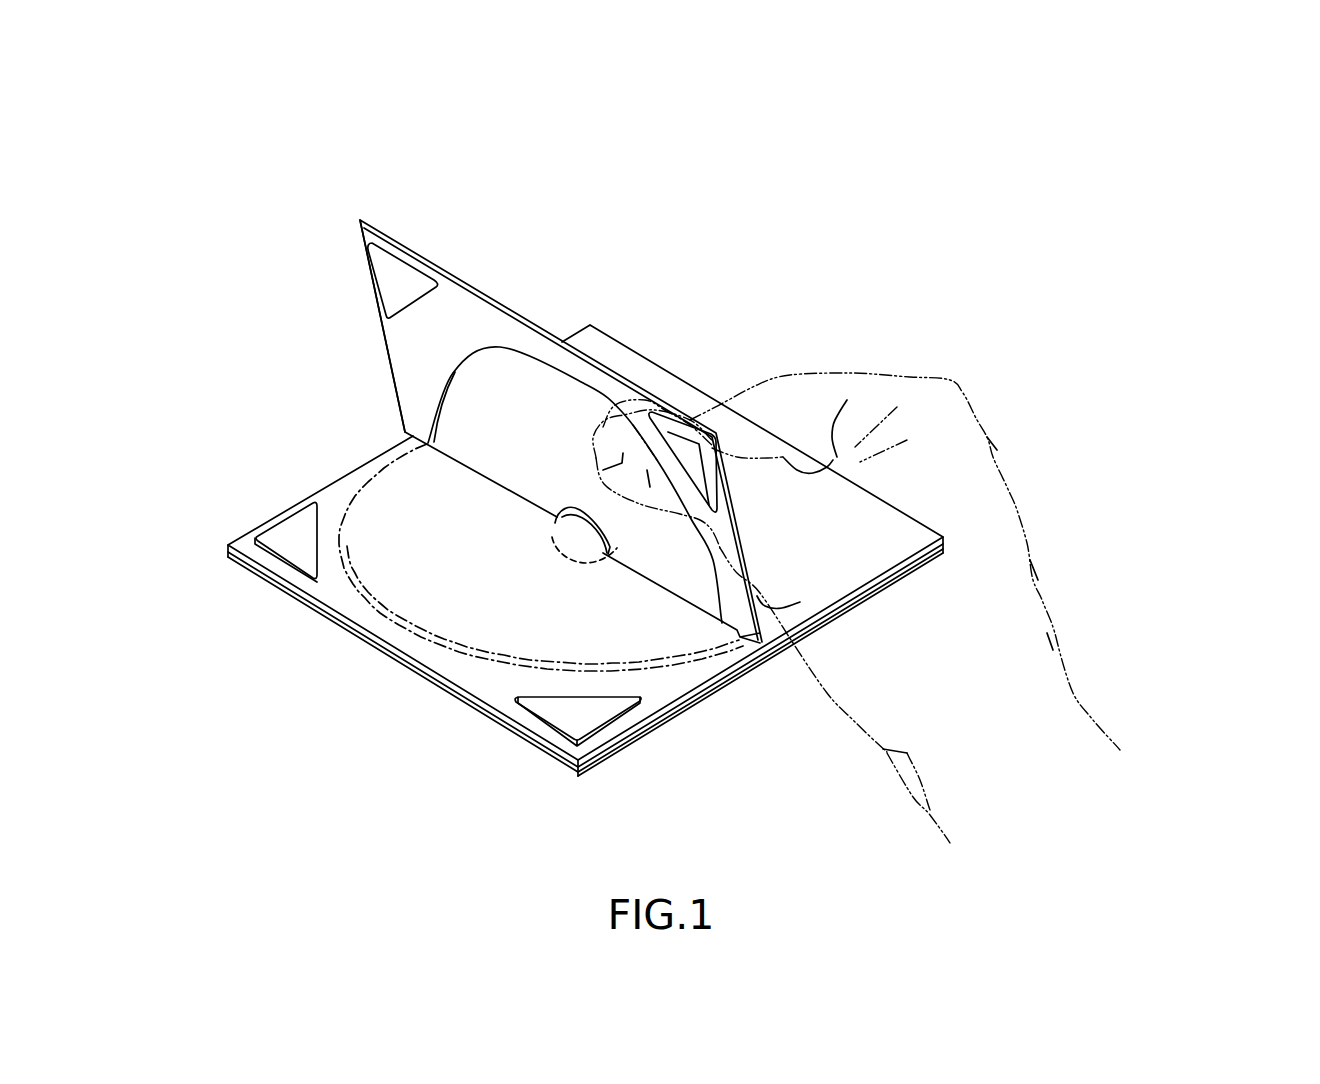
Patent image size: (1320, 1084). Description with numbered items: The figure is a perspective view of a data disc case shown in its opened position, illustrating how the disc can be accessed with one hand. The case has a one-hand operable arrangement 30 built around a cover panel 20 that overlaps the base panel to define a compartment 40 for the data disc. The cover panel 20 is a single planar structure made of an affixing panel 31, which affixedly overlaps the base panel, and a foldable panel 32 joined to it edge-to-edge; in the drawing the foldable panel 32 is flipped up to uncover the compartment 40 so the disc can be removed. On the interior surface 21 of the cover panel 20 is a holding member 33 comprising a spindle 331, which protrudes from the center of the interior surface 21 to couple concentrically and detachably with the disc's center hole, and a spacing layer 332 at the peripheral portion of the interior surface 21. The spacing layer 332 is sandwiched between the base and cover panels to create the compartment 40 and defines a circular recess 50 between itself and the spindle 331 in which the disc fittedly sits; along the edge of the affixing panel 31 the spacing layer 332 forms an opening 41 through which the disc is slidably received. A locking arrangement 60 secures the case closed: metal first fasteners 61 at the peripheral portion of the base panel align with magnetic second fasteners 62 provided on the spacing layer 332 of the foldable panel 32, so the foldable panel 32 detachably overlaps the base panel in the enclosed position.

The cover panel 20 is at (677, 495).
The interior surface 21 is at (547, 371).
The one-hand operable arrangement 30 is at (1093, 662).
The affixing panel 31 is at (850, 537).
The foldable panel 32 is at (717, 523).
The holding member 33 is at (449, 455).
The spindle 331 is at (575, 533).
The spacing layer 332 is at (412, 375).
The compartment 40 is at (441, 556).
The opening 41 is at (457, 473).
The recess 50 is at (470, 393).
The locking arrangement 60 is at (898, 225).
The first fastener 61 is at (282, 550).
The second fastener 62 is at (388, 280).